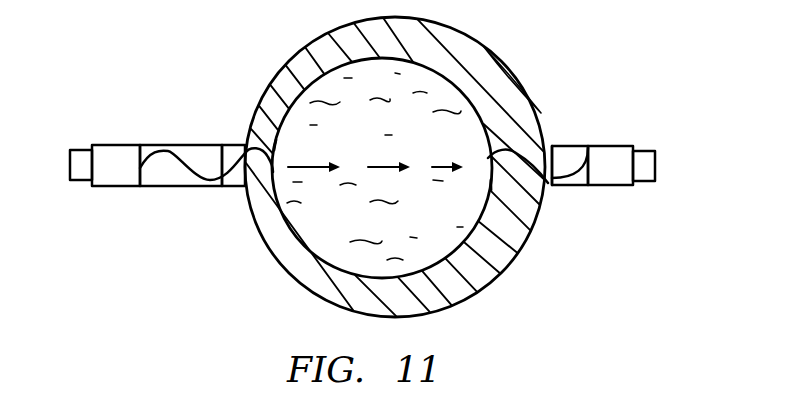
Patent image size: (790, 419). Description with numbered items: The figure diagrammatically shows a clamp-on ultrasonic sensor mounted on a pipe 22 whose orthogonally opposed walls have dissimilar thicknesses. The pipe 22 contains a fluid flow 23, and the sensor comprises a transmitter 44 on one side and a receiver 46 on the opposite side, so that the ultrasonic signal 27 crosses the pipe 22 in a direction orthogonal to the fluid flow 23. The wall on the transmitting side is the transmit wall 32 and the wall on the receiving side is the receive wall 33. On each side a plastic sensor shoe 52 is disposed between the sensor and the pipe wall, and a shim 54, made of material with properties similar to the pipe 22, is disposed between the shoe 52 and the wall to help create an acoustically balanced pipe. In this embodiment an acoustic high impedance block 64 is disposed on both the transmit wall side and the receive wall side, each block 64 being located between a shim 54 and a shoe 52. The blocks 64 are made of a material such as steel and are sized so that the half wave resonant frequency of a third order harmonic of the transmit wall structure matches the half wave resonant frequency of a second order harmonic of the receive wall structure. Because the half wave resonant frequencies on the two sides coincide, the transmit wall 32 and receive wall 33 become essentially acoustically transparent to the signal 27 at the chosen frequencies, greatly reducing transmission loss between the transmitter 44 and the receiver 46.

The pipe 22 is at (520, 60).
The fluid flow 23 is at (348, 231).
The signal 27 is at (185, 170).
The first pipe wall 32 is at (263, 145).
The second pipe wall 33 is at (520, 172).
The transmitter 44 is at (82, 165).
The receiver 46 is at (642, 160).
The sensor shoe 52 is at (617, 165).
The shim 54 is at (237, 180).
The acoustic high impedance block 64 is at (208, 157).